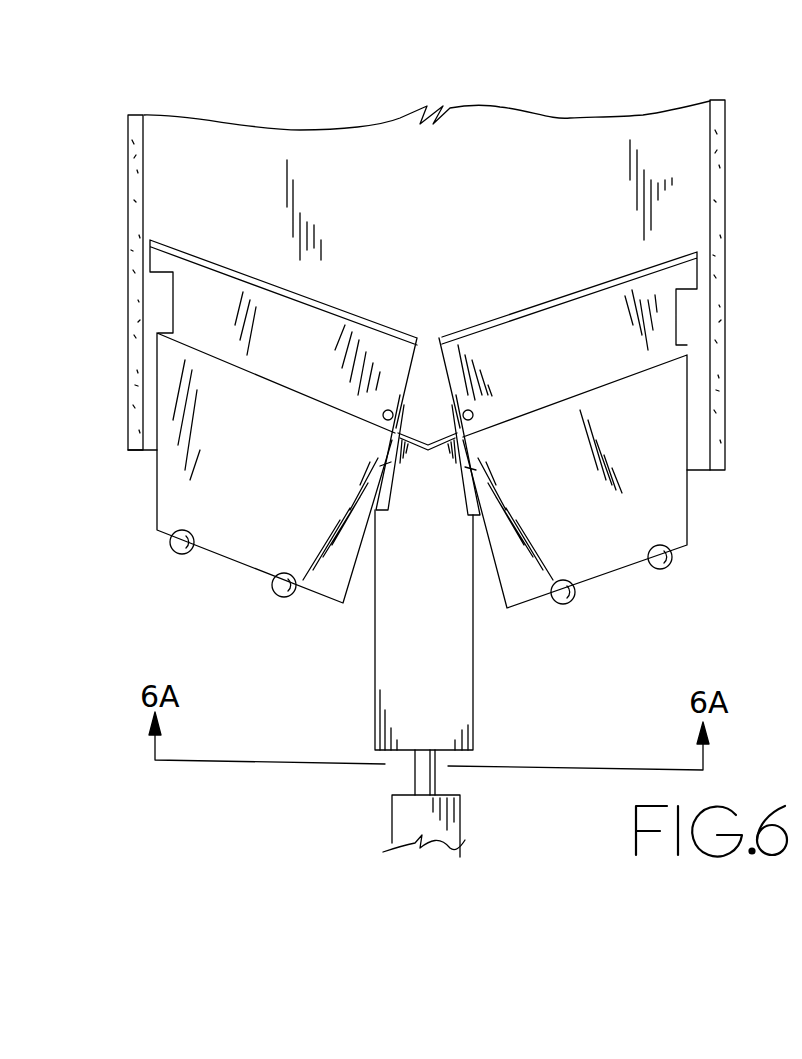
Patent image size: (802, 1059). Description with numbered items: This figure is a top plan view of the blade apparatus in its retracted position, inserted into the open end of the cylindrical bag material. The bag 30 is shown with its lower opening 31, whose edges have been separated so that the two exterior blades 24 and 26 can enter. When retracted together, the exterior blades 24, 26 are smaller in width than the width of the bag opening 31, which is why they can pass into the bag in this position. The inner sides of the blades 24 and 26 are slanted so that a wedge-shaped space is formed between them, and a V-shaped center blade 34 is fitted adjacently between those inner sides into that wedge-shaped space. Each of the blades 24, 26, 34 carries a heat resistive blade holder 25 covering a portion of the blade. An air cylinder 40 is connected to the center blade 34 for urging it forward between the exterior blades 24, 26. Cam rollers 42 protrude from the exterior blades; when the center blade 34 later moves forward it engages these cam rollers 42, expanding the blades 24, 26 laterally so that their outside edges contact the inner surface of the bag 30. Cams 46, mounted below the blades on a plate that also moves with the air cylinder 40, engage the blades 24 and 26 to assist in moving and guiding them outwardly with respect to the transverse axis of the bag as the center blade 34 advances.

The exterior blade 24 is at (173, 303).
The heat resistive blade holder 25 is at (172, 492).
The exterior blade 26 is at (698, 273).
The bag 30 is at (575, 142).
The lower opening 31 is at (708, 477).
The V-shaped center blade 34 is at (458, 683).
The air cylinder 40 is at (445, 836).
The cam rollers 42 is at (388, 409).
The cams 46 is at (180, 555).